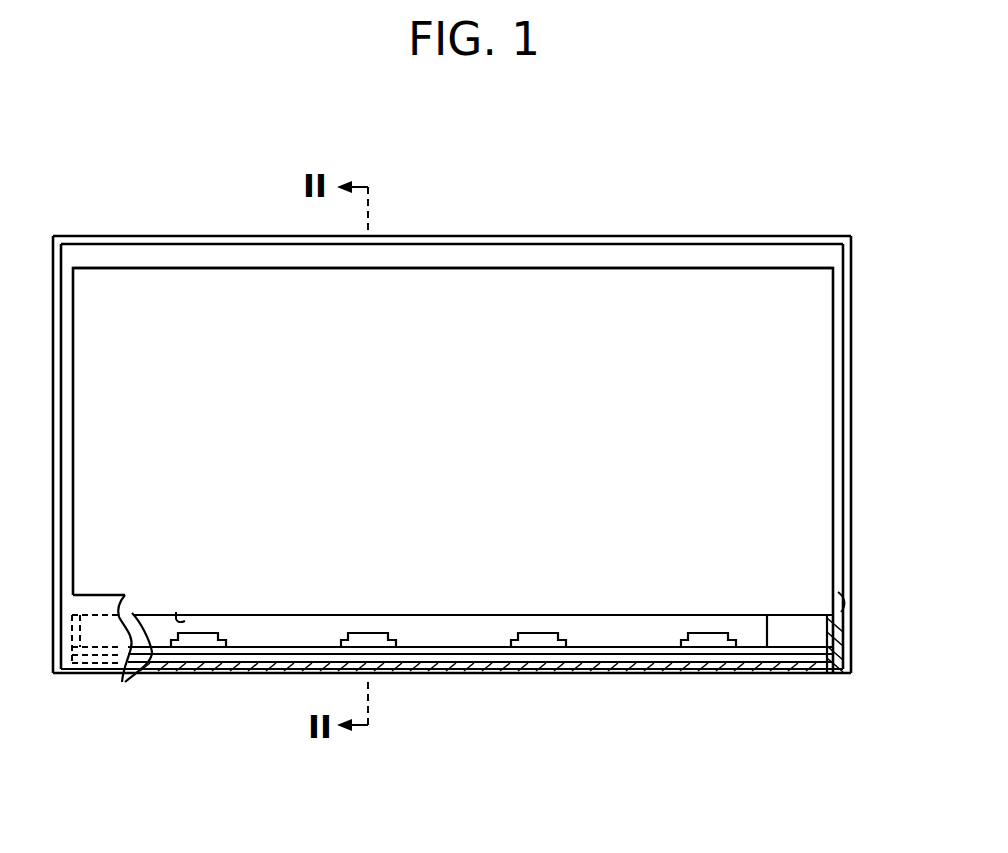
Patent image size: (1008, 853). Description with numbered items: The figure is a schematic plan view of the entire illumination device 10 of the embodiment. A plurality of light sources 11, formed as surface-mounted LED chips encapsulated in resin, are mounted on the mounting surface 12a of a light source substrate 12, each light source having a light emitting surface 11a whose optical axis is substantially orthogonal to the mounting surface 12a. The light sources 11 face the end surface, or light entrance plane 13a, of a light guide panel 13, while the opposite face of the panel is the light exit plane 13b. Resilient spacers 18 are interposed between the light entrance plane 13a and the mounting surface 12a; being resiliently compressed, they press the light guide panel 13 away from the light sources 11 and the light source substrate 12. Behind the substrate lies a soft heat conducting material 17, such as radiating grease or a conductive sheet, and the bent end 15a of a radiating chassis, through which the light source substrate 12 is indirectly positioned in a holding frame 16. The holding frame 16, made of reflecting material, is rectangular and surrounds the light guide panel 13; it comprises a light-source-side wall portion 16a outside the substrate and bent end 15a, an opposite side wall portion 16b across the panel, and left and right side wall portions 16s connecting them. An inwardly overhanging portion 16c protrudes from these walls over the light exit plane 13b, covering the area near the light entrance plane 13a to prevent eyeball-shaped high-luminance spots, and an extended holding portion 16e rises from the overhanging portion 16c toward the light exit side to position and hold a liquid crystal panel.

The illumination device 10 is at (292, 130).
The light sources 11 is at (192, 640).
The light emitting surface 11a is at (536, 633).
The light source substrate 12 is at (637, 662).
The mounting surface 12a is at (278, 640).
The light guide panel 13 is at (177, 312).
The light exit plane 13b is at (453, 218).
The end surface (light entrance plane) 13a is at (177, 612).
The bent end 15a is at (803, 672).
The holding frame 16 is at (702, 228).
The light-source-side wall portion 16a is at (835, 674).
The opposite side wall portion 16b is at (517, 236).
The inwardly overhanging portion 16c is at (93, 598).
The extended holding portion 16e is at (57, 468).
The side wall portions 16s is at (57, 390).
The heat conducting material 17 is at (760, 662).
The resilient spacers 18 is at (125, 680).